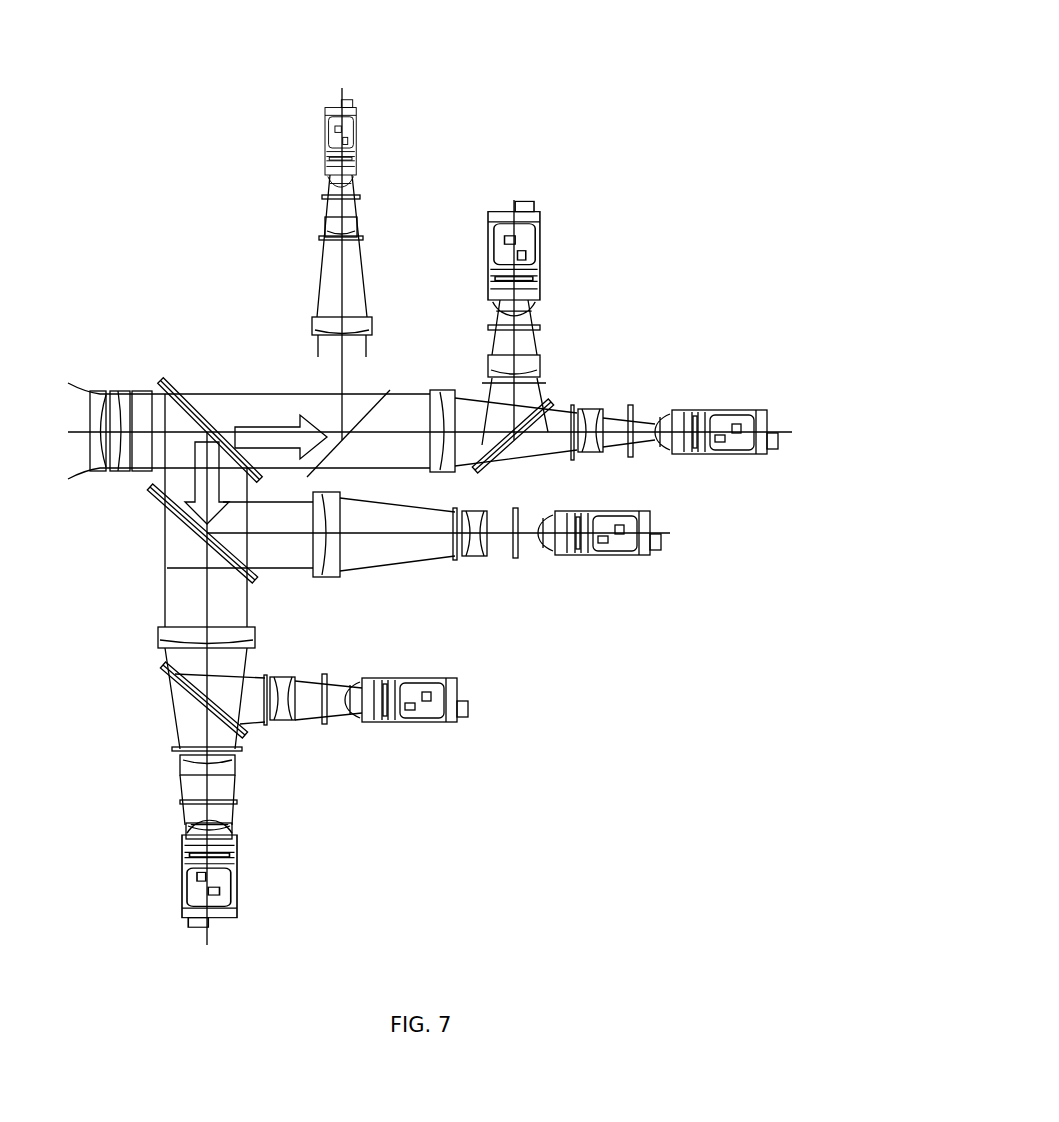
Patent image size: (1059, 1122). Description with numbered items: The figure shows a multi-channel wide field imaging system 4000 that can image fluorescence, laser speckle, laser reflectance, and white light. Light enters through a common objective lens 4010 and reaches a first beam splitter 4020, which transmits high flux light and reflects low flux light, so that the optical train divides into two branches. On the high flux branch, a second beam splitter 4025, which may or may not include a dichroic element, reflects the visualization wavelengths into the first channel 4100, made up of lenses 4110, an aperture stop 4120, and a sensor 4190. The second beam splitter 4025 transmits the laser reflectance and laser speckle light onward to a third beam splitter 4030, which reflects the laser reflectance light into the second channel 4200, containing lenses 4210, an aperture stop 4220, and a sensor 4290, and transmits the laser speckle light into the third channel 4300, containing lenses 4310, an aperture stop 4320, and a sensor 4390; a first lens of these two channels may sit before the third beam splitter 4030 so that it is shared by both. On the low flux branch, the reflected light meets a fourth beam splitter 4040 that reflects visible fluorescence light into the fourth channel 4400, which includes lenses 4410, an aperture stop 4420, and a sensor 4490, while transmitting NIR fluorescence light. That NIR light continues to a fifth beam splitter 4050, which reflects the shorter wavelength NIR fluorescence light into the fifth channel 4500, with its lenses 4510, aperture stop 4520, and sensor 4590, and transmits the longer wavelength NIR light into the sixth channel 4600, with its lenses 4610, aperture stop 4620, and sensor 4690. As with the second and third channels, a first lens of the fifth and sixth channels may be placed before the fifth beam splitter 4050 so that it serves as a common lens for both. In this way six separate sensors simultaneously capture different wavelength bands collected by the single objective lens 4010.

The wide field imaging system 4000 is at (672, 28).
The common objective lens 4010 is at (120, 392).
The first beam splitter 4020 is at (207, 388).
The second beam splitter 4025 is at (342, 395).
The third beam splitter 4030 is at (534, 408).
The fourth beam splitter 4040 is at (150, 497).
The fifth beam splitter 4050 is at (165, 668).
The first channel 4100 is at (340, 97).
The lenses 4110 is at (332, 227).
The aperture stop 4120 is at (358, 238).
The sensor 4190 is at (358, 122).
The second channel 4200 is at (514, 205).
The lenses 4210 is at (495, 355).
The aperture stop 4220 is at (540, 355).
The sensor 4290 is at (540, 237).
The third channel 4300 is at (772, 430).
The lenses 4310 is at (442, 472).
The aperture stop 4320 is at (555, 405).
The sensor 4390 is at (742, 410).
The fourth channel 4400 is at (656, 525).
The lenses 4410 is at (335, 578).
The aperture stop 4420 is at (455, 560).
The sensor 4490 is at (655, 556).
The fifth channel 4500 is at (472, 698).
The lenses 4510 is at (357, 682).
The aperture stop 4520 is at (268, 724).
The sensor 4590 is at (425, 720).
The sixth channel 4600 is at (207, 930).
The lenses 4610 is at (158, 634).
The aperture stop 4620 is at (242, 749).
The sensor 4690 is at (190, 888).